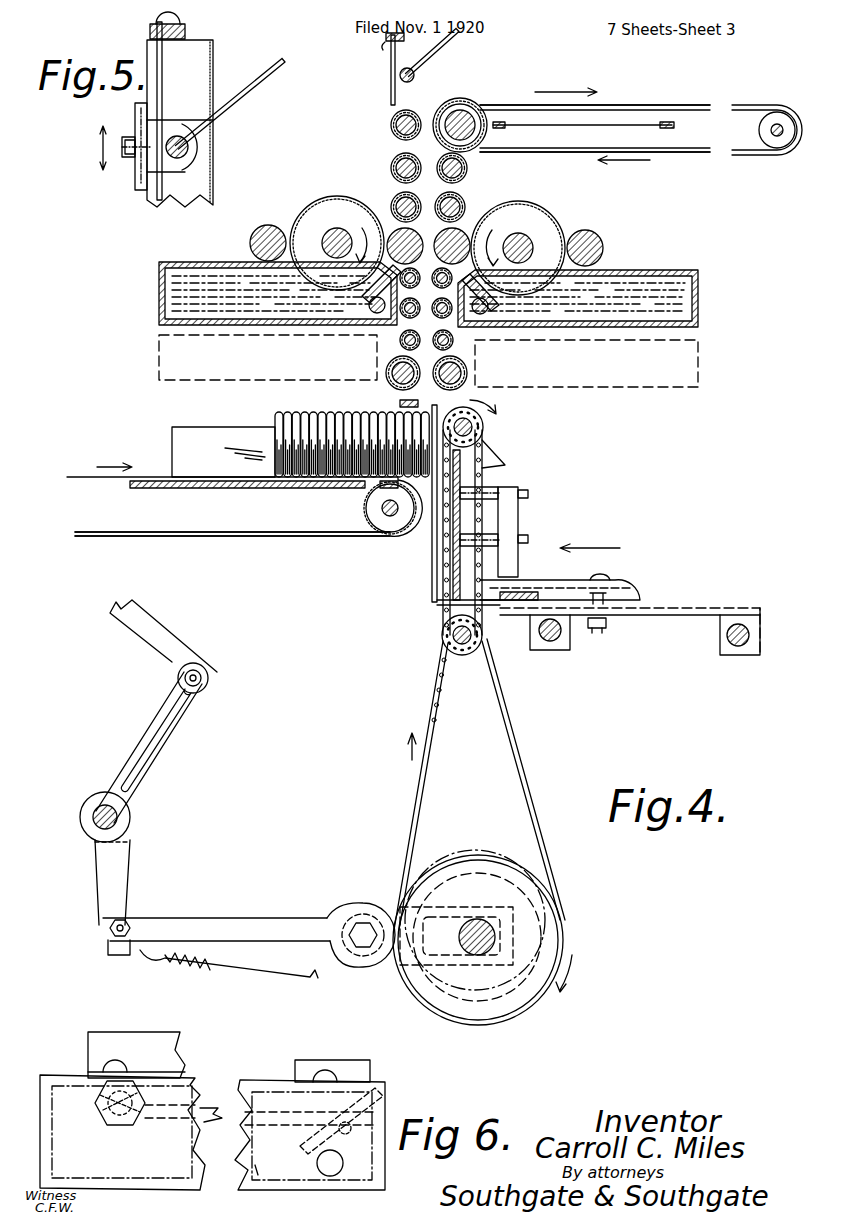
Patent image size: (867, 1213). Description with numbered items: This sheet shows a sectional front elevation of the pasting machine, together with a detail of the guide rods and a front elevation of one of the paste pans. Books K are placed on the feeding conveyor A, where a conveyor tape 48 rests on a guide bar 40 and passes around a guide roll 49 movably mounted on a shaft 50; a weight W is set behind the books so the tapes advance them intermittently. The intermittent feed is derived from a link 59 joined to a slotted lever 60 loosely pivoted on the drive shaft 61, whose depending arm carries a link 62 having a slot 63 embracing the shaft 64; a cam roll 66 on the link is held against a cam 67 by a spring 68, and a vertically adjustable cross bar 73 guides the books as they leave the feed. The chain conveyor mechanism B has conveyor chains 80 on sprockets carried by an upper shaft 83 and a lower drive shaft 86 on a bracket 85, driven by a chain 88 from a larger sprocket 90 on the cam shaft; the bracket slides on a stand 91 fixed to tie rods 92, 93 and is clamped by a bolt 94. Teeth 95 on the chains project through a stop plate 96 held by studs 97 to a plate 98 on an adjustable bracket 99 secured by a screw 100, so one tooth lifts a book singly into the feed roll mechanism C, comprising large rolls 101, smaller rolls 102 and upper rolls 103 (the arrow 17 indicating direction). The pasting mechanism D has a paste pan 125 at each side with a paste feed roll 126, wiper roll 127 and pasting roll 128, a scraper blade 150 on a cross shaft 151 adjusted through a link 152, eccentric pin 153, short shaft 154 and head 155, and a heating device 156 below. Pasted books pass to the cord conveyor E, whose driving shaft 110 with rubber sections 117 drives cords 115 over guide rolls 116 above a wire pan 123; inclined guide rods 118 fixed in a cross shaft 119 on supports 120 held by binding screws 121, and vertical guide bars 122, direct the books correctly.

In FIG. 4, the direction arrow 17 is at (590, 538).
In FIG. 4, the guide bar 40 is at (220, 489).
In FIG. 4, the conveyor tape 48 is at (270, 537).
In FIG. 4, the guide roll 49 is at (379, 522).
In FIG. 4, the shaft 50 is at (382, 508).
In FIG. 4, the link 59 is at (160, 668).
In FIG. 4, the slotted lever 60 is at (140, 772).
In FIG. 4, the drive shaft 61 is at (118, 820).
In FIG. 4, the link 62 is at (215, 921).
In FIG. 4, the slot or opening 63 is at (452, 958).
In FIG. 4, the shaft 64 is at (474, 918).
In FIG. 4, the cam roll 66 is at (380, 968).
In FIG. 4, the cam 67 is at (386, 908).
In FIG. 4, the spring 68 is at (229, 976).
In FIG. 4, the cross bar 73 is at (395, 405).
In FIG. 4, the conveyor chain 80 is at (441, 547).
In FIG. 4, the upper shaft 83 is at (484, 430).
In FIG. 4, the bracket 85 is at (423, 570).
In FIG. 4, the drive shaft 86 is at (444, 644).
In FIG. 4, the chain 88 is at (420, 774).
In FIG. 4, the sprocket 90 is at (475, 850).
In FIG. 4, the stand 91 is at (727, 612).
In FIG. 4, the tie rod 92 is at (550, 642).
In FIG. 4, the tie rod 93 is at (727, 643).
In FIG. 4, the bolt 94 is at (600, 630).
In FIG. 4, the tooth or projection 95 is at (504, 463).
In FIG. 4, the stop plate 96 is at (441, 590).
In FIG. 4, the stud 97 is at (483, 529).
In FIG. 4, the plate 98 is at (519, 513).
In FIG. 4, the bracket 99 is at (519, 558).
In FIG. 4, the bolt or screw 100 is at (565, 578).
In FIG. 4, the roll 101 is at (386, 374).
In FIG. 4, the roll 102 is at (440, 318).
In FIG. 4, the roll 103 is at (415, 176).
In FIG. 4, the driving shaft 110 is at (461, 112).
In FIG. 4, the cord 115 is at (610, 108).
In FIG. 4, the guide roll 116 is at (759, 131).
In FIG. 4, the rubber section 117 is at (440, 110).
In FIG. 5, the inclined guide rod 118 is at (238, 95).
In FIG. 4, the inclined guide rod 118 is at (437, 47).
In FIG. 5, the cross shaft 119 is at (189, 150).
In FIG. 4, the cross shaft 119 is at (414, 73).
In FIG. 5, the support 120 is at (181, 173).
In FIG. 5, the binding screw 121 is at (126, 160).
In FIG. 5, the vertical guide bar 122 is at (160, 103).
In FIG. 4, the vertical guide bar 122 is at (391, 84).
In FIG. 4, the wire pan or basket 123 is at (537, 126).
In FIG. 4, the paste pan 125 is at (159, 302).
In FIG. 6, the paste pan 125 is at (256, 1083).
In FIG. 4, the paste feed roll 126 is at (330, 204).
In FIG. 4, the wiper roll 127 is at (250, 244).
In FIG. 4, the pasting roll 128 is at (395, 228).
In FIG. 4, the scraper blade 150 is at (362, 298).
In FIG. 6, the scraper blade 150 is at (358, 1111).
In FIG. 4, the cross shaft 151 is at (376, 314).
In FIG. 6, the cross shaft 151 is at (341, 1163).
In FIG. 6, the link 152 is at (272, 1128).
In FIG. 6, the eccentric pin 153 is at (145, 1104).
In FIG. 6, the short shaft 154 is at (135, 1072).
In FIG. 6, the head 155 is at (97, 1099).
In FIG. 4, the water pan or heating device 156 is at (159, 364).
In FIG. 4, the feeding conveyor A is at (244, 499).
In FIG. 4, the chain conveyor mechanism B is at (461, 517).
In FIG. 4, the conveyor rolls and driving mechanism C is at (422, 185).
In FIG. 4, the pasting mechanism D is at (426, 238).
In FIG. 4, the cord conveying mechanism E is at (641, 120).
In FIG. 4, the book K is at (275, 418).
In FIG. 4, the weight W is at (223, 452).